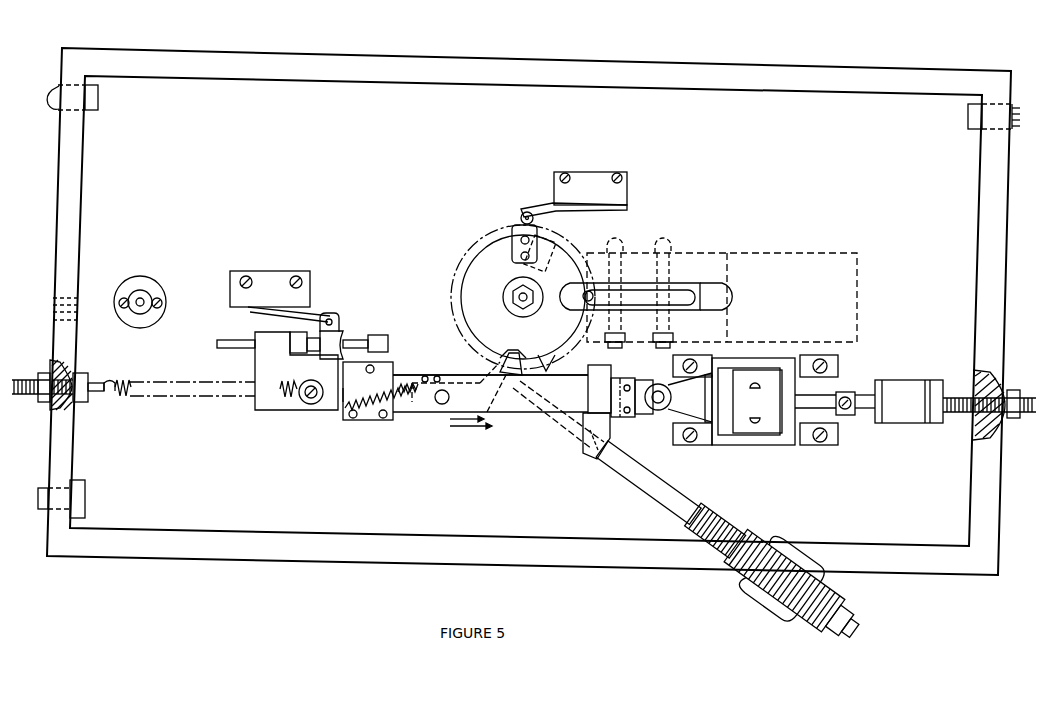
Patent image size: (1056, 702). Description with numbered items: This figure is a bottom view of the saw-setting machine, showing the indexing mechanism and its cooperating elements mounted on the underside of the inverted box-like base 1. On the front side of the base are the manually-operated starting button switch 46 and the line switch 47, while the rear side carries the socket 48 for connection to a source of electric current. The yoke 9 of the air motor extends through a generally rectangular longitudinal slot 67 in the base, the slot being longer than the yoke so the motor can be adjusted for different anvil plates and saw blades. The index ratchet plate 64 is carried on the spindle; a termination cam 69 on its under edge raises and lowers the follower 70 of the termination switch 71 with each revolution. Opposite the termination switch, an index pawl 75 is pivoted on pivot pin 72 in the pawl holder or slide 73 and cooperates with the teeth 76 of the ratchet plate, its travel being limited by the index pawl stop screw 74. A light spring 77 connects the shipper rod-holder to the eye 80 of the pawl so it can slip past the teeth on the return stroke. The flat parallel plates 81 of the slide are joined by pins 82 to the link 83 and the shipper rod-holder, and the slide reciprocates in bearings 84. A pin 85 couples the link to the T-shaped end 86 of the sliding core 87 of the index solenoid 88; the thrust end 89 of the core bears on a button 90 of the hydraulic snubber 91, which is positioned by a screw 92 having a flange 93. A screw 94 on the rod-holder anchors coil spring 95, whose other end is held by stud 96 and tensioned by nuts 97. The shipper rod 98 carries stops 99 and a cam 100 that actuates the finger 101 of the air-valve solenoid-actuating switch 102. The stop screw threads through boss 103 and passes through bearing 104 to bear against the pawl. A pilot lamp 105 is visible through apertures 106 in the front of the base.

The inverted box-like base 1 is at (436, 56).
The yoke 9 is at (678, 296).
The starting button switch 46 is at (38, 494).
The line switch 47 is at (53, 92).
The socket 48 is at (1014, 112).
The index ratchet plate 64 is at (508, 280).
The longitudinal slot 67 is at (730, 292).
The termination cam 69 is at (512, 228).
The follower 70 is at (537, 222).
The termination switch 71 is at (624, 188).
The pivot pin 72 is at (440, 402).
The pawl holder or slide 73 is at (520, 411).
The index pawl stop screw 74 is at (556, 422).
The index pawl 75 is at (500, 368).
The teeth 76 is at (548, 362).
The light spring 77 is at (357, 421).
The eye 80 is at (417, 378).
The flat parallel rectangular plates 81 is at (490, 388).
The pins 82 is at (343, 398).
The link 83 is at (648, 414).
The bearings 84 is at (603, 373).
The pin 85 is at (656, 389).
The T-shaped end 86 is at (668, 404).
The sliding core 87 is at (728, 403).
The index solenoid 88 is at (762, 443).
The thrust end 89 is at (844, 394).
The button 90 is at (866, 409).
The hydraulic snubber 91 is at (888, 411).
The screw 92 is at (958, 415).
The flange 93 is at (938, 386).
The screw 94 is at (305, 402).
The coil spring 95 is at (193, 393).
The stud 96 is at (94, 383).
The nuts 97 is at (42, 375).
The shipper rod 98 is at (222, 340).
The stops 99 is at (298, 338).
The cam 100 is at (343, 331).
The finger 101 is at (329, 312).
The air-valve solenoid-actuating switch 102 is at (279, 280).
The boss 103 is at (778, 580).
The bearing 104 is at (593, 452).
The pilot lamp 105 is at (153, 291).
The apertures 106 is at (52, 313).